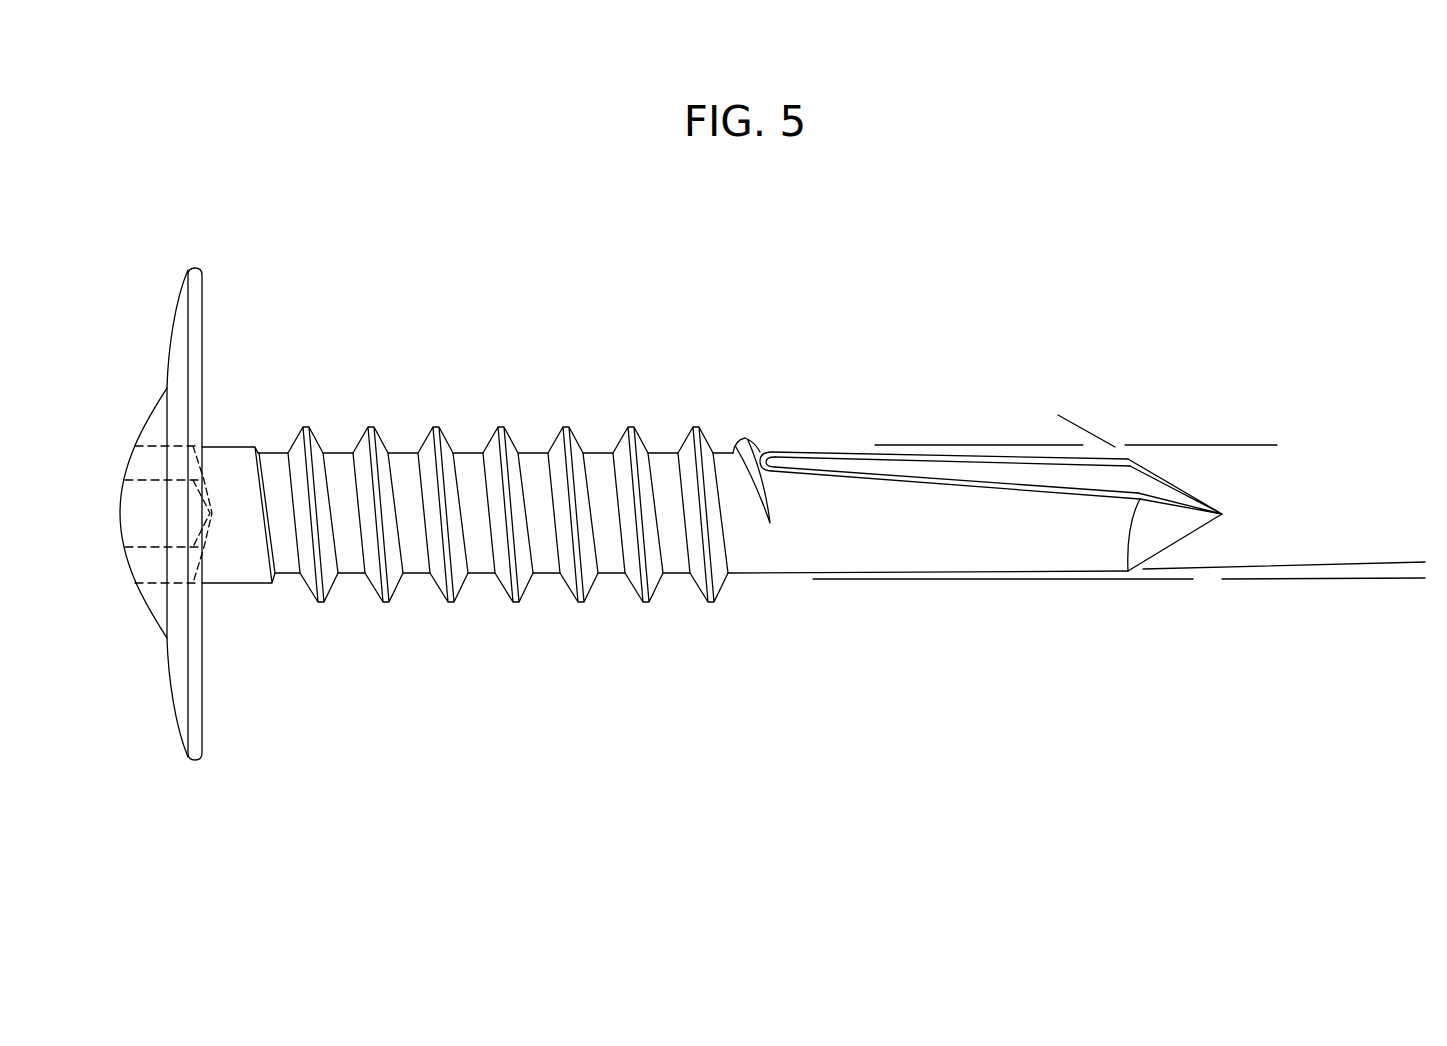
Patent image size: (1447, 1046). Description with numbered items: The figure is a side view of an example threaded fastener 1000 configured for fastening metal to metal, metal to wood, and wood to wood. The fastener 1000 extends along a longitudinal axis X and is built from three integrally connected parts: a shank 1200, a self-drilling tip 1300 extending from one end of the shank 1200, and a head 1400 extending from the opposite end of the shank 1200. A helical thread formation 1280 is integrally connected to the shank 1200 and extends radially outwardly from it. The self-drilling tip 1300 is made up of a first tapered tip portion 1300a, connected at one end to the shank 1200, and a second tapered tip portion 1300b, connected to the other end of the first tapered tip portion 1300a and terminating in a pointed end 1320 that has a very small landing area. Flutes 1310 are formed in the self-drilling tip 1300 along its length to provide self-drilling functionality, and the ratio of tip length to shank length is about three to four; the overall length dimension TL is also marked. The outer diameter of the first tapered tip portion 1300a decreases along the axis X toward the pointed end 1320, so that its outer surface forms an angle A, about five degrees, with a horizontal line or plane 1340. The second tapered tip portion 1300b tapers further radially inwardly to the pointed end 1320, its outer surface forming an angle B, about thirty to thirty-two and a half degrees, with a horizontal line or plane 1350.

The fastener 1000 is at (710, 782).
The shank 1200 is at (777, 670).
The helical thread formation 1280 is at (512, 438).
The self-drilling tip 1300 is at (1192, 548).
The first tapered tip portion 1300a is at (1142, 670).
The second tapered tip portion 1300b is at (1142, 670).
The flutes 1310 is at (1150, 479).
The pointed end 1320 is at (1225, 516).
The horizontal line or plane 1340 is at (1395, 500).
The horizontal line or plane 1350 is at (1265, 445).
The head 1400 is at (172, 295).
The total length TL is at (1213, 417).
The longitudinal axis X is at (1268, 513).
The angle A is at (1333, 573).
The angle B is at (1130, 570).